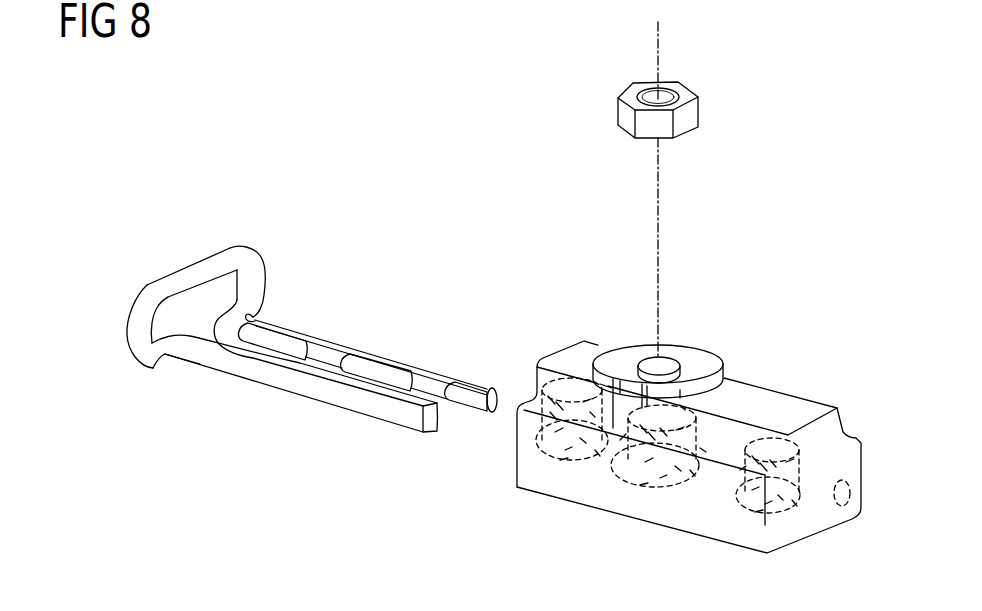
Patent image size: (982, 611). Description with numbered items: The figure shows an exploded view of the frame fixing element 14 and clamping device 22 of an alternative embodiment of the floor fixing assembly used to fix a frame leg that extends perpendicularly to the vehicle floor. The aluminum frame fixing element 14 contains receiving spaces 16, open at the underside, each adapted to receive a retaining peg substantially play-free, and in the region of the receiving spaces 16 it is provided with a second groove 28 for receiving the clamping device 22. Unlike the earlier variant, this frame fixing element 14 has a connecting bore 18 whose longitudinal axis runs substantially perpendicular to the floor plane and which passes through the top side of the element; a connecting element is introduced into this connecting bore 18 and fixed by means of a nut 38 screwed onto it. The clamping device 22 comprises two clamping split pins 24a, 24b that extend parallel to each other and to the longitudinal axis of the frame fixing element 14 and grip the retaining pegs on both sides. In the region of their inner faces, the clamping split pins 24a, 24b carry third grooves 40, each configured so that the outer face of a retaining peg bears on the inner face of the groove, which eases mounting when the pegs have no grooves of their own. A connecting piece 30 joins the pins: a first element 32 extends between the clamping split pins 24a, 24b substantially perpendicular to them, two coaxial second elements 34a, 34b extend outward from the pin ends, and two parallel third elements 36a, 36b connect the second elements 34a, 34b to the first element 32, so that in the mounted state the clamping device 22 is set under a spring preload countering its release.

The frame fixing element 14 is at (666, 449).
The receiving space 16 is at (563, 477).
The connecting bore 18 is at (673, 356).
The clamping device 22 is at (324, 337).
The clamping split pin 24a is at (352, 406).
The clamping split pin 24b is at (368, 339).
The second groove 28 is at (524, 493).
The connecting piece 30 is at (198, 298).
The first element 32 is at (198, 308).
The second element 34a is at (168, 355).
The second element 34b is at (254, 313).
The third element 36a is at (128, 338).
The third element 36b is at (256, 276).
The nut 38 is at (690, 88).
The third groove 40 is at (307, 335).